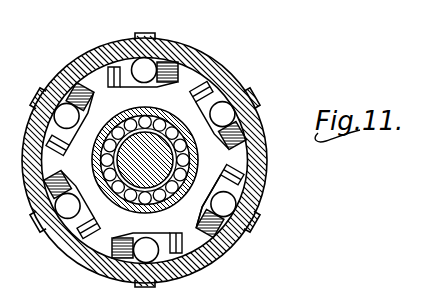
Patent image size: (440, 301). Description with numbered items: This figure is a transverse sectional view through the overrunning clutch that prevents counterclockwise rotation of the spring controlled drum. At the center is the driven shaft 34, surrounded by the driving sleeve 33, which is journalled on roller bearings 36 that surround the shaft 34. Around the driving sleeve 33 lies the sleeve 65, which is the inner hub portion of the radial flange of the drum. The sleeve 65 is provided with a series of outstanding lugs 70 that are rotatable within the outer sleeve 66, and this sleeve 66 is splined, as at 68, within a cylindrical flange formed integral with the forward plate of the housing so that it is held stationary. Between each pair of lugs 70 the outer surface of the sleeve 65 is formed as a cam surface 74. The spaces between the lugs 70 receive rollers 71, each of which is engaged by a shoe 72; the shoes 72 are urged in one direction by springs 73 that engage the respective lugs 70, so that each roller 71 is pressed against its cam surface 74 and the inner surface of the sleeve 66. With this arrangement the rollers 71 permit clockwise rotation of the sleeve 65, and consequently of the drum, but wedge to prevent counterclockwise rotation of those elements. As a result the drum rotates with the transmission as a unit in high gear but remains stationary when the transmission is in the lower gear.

The sleeve 65 is at (183, 52).
The sleeve 66 is at (87, 62).
The spline 68 is at (142, 34).
The lugs 70 is at (192, 78).
The rollers 71 is at (224, 110).
The shoes 72 is at (240, 188).
The springs 73 is at (231, 175).
The cam surface 74 is at (238, 127).
The driving sleeve 33 is at (138, 108).
The driven shaft 34 is at (158, 200).
The roller bearings 36 is at (185, 181).